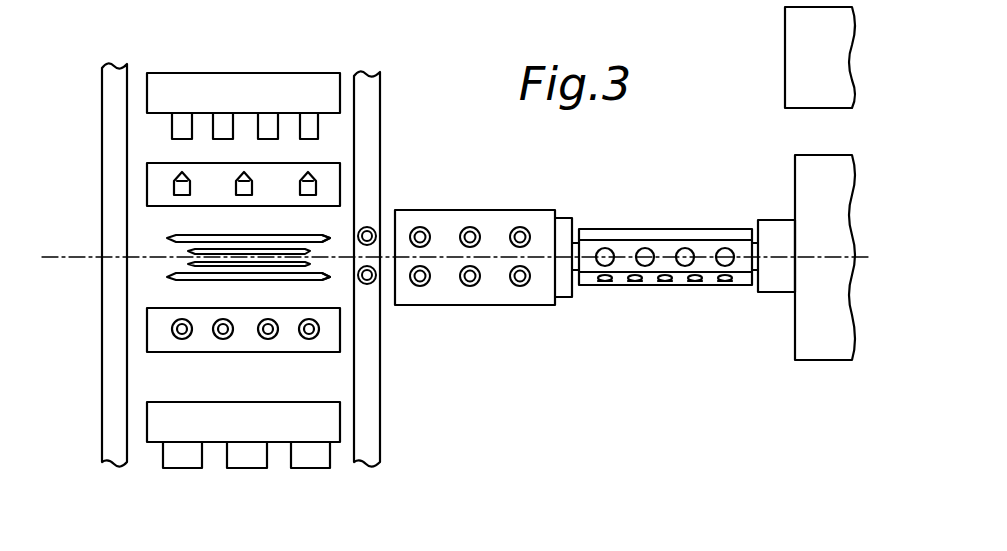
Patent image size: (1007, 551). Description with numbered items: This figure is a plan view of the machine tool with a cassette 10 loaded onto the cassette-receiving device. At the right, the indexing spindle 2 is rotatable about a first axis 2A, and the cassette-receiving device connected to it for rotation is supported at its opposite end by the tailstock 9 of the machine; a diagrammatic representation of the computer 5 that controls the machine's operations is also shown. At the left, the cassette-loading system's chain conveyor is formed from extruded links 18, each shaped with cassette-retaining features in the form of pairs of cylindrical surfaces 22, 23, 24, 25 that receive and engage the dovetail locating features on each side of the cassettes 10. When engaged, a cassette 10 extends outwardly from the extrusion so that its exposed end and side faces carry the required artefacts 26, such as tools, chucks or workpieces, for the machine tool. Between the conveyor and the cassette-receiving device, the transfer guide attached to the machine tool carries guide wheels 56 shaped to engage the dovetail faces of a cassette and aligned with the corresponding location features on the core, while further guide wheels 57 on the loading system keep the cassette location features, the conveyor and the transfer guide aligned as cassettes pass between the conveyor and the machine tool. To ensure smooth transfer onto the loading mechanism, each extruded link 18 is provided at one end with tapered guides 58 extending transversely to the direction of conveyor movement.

The cassette 10 is at (312, 73).
The artefacts 26 is at (175, 183).
The cylindrical surface 22 is at (178, 238).
The cylindrical surface 23 is at (170, 278).
The cylindrical surface 24 is at (188, 251).
The cylindrical surface 25 is at (188, 264).
The extruded link 18 is at (187, 276).
The tapered guides 58 is at (330, 238).
The guide wheels 57 is at (370, 228).
The guide wheels 56 is at (425, 228).
The tailstock 9 is at (563, 218).
The indexing spindle 2 is at (775, 233).
The first axis 2A is at (823, 257).
The computer 5 is at (800, 58).